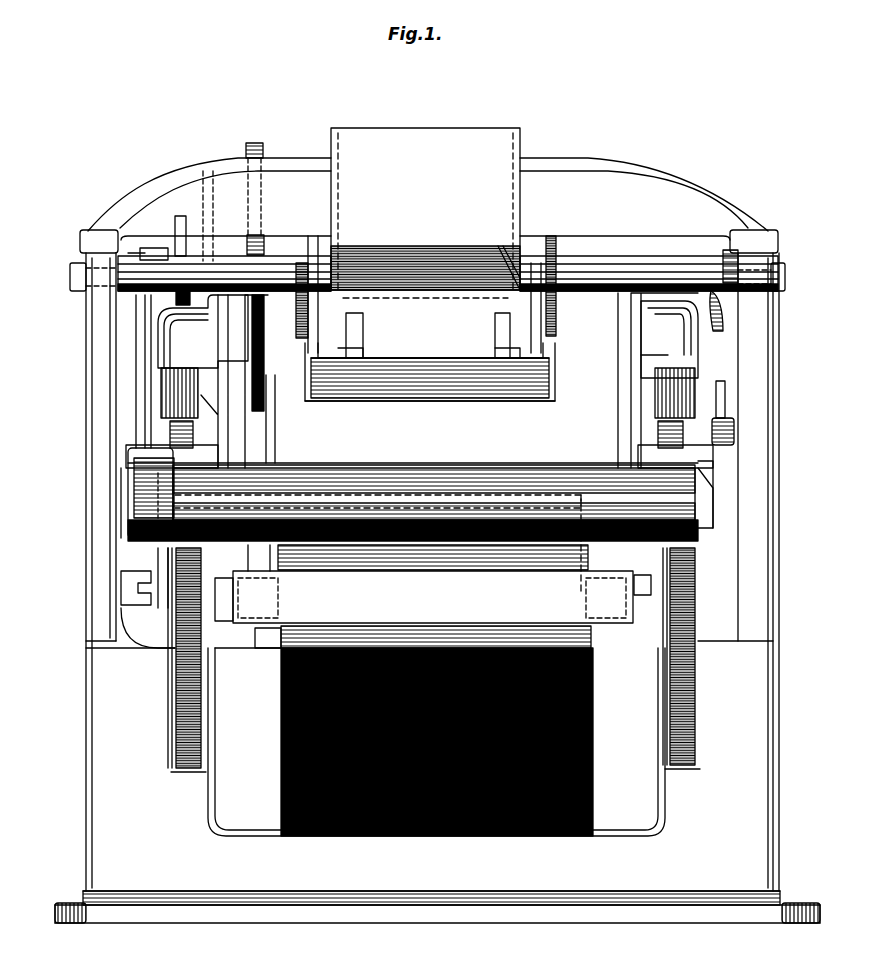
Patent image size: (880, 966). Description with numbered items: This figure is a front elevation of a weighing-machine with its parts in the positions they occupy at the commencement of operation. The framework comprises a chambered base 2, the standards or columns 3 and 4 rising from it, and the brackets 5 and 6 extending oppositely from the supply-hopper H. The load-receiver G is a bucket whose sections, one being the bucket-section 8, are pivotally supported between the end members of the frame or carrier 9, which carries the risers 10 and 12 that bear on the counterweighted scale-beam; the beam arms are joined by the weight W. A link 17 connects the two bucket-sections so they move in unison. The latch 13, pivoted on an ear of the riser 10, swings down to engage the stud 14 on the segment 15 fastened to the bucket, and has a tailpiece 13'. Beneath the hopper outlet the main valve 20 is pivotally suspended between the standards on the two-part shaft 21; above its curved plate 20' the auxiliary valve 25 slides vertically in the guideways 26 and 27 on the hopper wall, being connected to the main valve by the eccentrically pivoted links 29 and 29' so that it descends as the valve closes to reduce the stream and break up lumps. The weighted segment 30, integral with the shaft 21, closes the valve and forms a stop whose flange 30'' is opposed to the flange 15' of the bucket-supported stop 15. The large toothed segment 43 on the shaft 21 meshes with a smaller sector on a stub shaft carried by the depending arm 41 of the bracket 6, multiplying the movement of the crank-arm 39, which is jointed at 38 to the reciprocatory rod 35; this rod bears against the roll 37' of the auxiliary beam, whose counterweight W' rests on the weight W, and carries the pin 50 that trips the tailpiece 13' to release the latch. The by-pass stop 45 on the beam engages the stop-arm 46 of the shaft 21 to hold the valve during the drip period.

The chambered base 2 is at (437, 576).
The standard 3 is at (752, 450).
The standard 4 is at (85, 472).
The bracket 5 is at (644, 199).
The bracket 6 is at (178, 165).
The bucket-section 8 is at (273, 713).
The frame or carrier 9 is at (433, 596).
The riser 10 is at (230, 432).
The riser 12 is at (615, 388).
The latch 13 is at (413, 456).
The tailpiece 13' is at (130, 576).
The stud 14 is at (434, 658).
The segment 15 is at (288, 419).
The flange 15' is at (233, 353).
The link 17 is at (255, 550).
The main valve 20 is at (444, 372).
The curved plate 20' is at (430, 410).
The two-part supporting-shaft 21 is at (268, 255).
The auxiliary valve 25 is at (427, 340).
The guideway 26 is at (340, 300).
The guideway 27 is at (500, 298).
The link 29 is at (419, 253).
The link 29' is at (510, 252).
The weighted segment 30 is at (235, 191).
The flange 30'' is at (290, 294).
The actuating-connector 35 is at (145, 353).
The roll 37' is at (105, 495).
The pivot joint 38 is at (128, 243).
The crank-arm 39 is at (152, 242).
The depending arm 41 is at (205, 237).
The toothed segment 43 is at (174, 298).
The by-pass stop 45 is at (715, 392).
The stop-arm 46 is at (717, 305).
The latch-tripper pin 50 is at (133, 515).
The load-receiver G is at (248, 659).
The supply-hopper H is at (416, 130).
The weight W is at (420, 517).
The counterweight W' is at (116, 501).